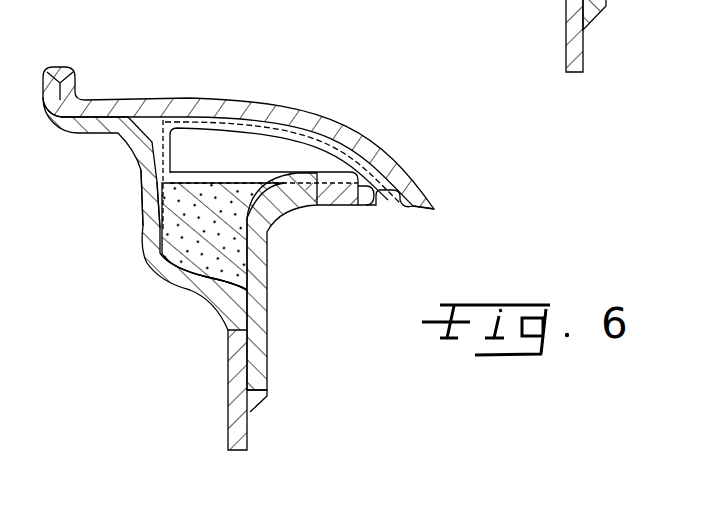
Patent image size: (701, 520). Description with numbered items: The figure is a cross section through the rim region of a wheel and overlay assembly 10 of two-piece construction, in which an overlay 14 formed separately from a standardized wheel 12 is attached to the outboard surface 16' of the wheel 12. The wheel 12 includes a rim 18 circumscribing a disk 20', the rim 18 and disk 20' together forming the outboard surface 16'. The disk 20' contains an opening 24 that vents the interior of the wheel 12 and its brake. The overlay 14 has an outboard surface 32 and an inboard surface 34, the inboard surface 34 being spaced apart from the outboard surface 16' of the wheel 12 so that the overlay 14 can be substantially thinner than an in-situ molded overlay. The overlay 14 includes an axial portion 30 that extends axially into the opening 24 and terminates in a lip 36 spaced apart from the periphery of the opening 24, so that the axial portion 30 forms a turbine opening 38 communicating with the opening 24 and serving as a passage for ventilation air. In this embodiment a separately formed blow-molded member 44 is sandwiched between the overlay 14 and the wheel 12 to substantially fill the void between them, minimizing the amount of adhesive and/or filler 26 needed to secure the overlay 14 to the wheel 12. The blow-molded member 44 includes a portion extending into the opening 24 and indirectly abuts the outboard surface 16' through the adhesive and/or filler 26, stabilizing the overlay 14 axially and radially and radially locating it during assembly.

The wheel and overlay assembly 10 is at (397, 113).
The wheel 12 is at (153, 281).
The overlay 14 is at (266, 100).
The outboard surface 16' is at (250, 234).
The rim 18 is at (148, 176).
The disk 20' is at (295, 292).
The opening 24 is at (380, 193).
The adhesive and/or filler 26 is at (225, 287).
The axial portion 30 is at (413, 170).
The outboard surface 32 is at (225, 98).
The inboard surface 34 is at (342, 127).
The lip 36 is at (427, 210).
The turbine opening 38 is at (435, 212).
The blow-molded member 44 is at (198, 123).